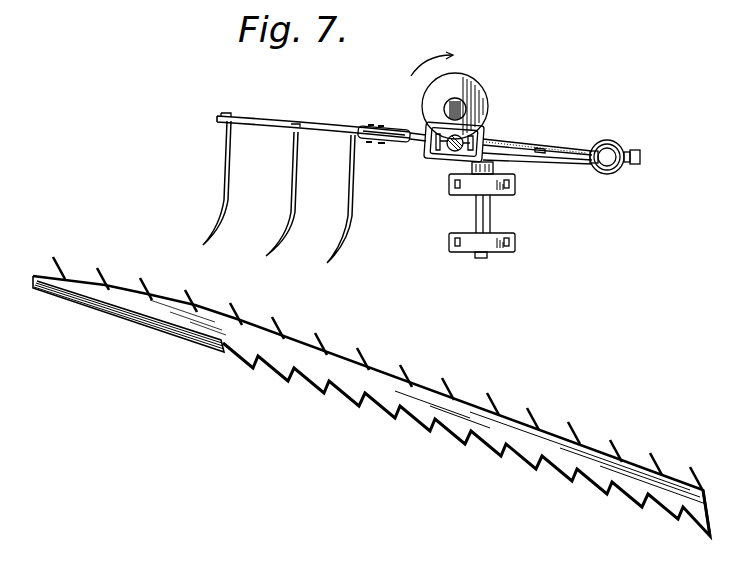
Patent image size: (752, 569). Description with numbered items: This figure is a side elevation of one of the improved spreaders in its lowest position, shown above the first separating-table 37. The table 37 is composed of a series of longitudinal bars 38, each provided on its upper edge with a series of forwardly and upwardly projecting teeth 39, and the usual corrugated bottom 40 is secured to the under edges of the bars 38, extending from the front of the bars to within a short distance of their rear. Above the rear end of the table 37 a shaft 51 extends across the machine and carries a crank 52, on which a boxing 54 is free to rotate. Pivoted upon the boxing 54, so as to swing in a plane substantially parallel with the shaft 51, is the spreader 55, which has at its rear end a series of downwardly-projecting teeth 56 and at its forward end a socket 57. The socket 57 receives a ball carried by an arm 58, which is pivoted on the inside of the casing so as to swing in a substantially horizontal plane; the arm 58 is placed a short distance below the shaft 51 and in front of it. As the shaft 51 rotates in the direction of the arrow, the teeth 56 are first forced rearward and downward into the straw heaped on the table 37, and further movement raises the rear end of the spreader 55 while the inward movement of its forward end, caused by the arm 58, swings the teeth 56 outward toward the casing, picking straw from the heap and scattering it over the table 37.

The first separating-table 37 is at (371, 406).
The longitudinal bars 38 is at (150, 318).
The teeth 39 is at (64, 266).
The corrugated bottom 40 is at (307, 378).
The shaft 51 is at (466, 103).
The crank 52 is at (483, 131).
The boxing 54 is at (446, 159).
The spreader 55 is at (396, 128).
The teeth 56 is at (290, 193).
The socket 57 is at (622, 152).
The arm 58 is at (520, 165).